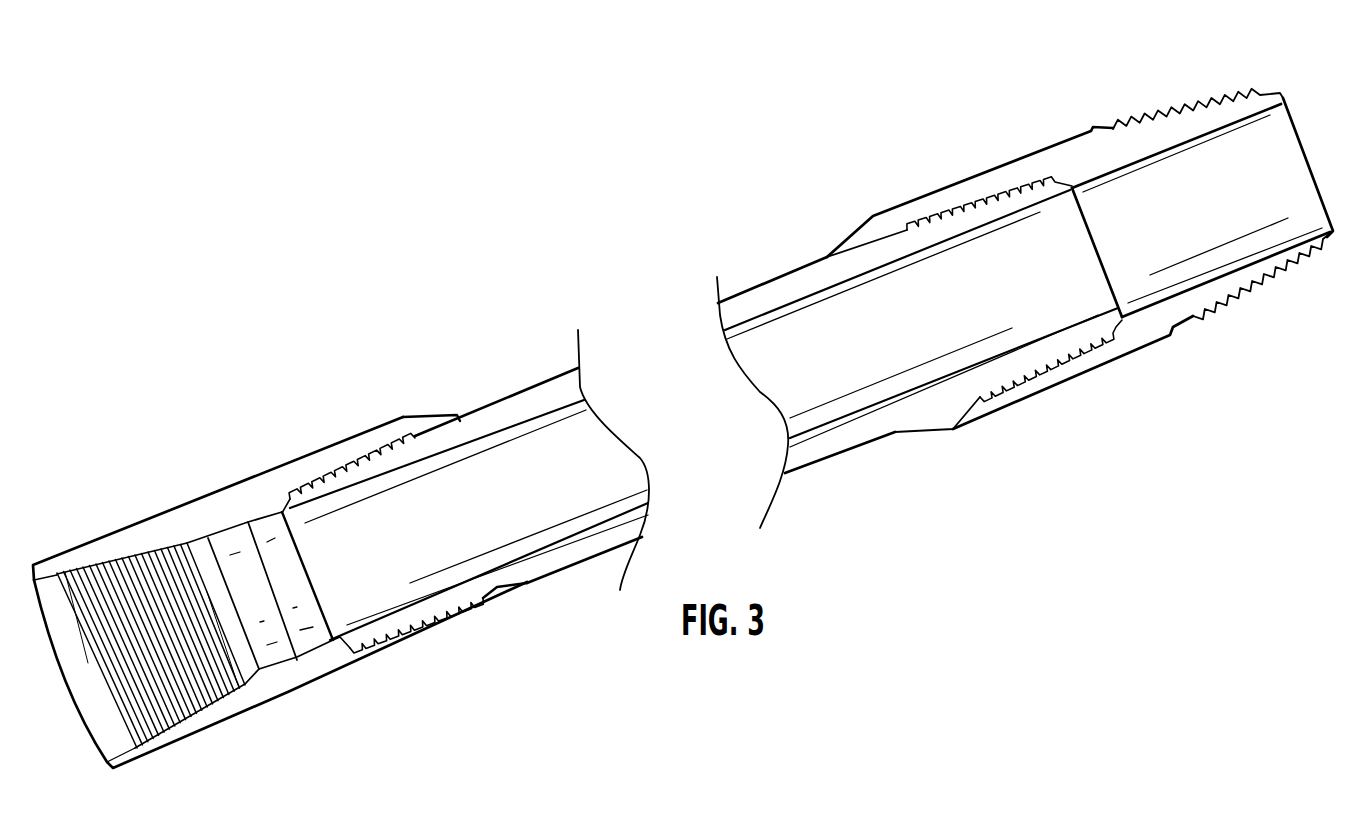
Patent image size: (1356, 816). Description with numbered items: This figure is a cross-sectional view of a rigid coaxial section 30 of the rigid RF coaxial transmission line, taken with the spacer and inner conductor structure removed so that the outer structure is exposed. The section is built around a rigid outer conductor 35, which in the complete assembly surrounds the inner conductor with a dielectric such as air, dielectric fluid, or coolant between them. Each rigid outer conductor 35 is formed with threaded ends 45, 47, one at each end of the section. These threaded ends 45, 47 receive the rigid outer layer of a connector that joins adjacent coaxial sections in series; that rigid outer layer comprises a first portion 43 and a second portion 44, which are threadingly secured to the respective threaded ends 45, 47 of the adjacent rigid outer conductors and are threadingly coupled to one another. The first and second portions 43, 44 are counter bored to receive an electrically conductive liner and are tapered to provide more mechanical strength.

The rigid coaxial section 30 is at (696, 166).
The rigid outer conductor 35 is at (558, 396).
The first portion of the rigid outer layer 43 is at (237, 487).
The second portion of the rigid outer layer 44 is at (1071, 134).
The threaded end 45 is at (963, 208).
The threaded end 47 is at (373, 457).